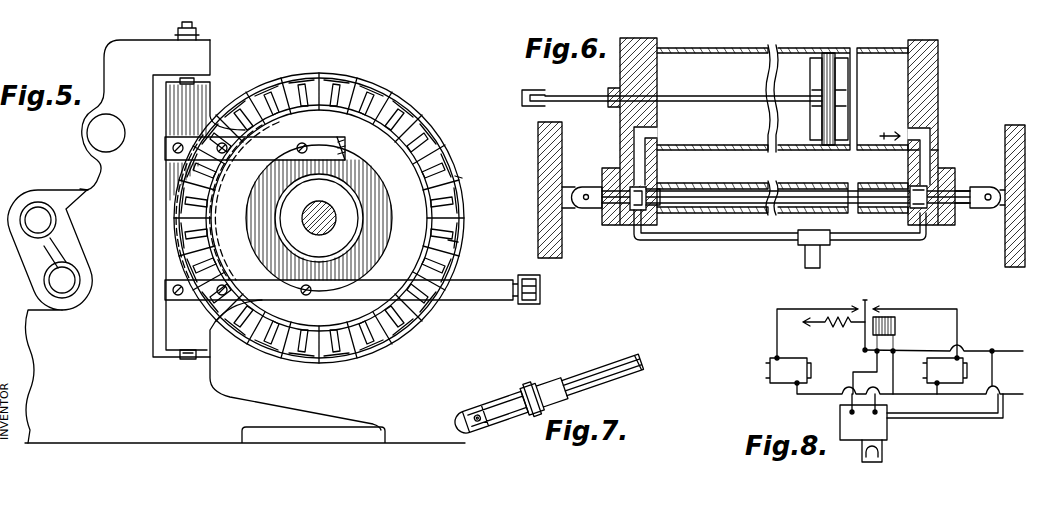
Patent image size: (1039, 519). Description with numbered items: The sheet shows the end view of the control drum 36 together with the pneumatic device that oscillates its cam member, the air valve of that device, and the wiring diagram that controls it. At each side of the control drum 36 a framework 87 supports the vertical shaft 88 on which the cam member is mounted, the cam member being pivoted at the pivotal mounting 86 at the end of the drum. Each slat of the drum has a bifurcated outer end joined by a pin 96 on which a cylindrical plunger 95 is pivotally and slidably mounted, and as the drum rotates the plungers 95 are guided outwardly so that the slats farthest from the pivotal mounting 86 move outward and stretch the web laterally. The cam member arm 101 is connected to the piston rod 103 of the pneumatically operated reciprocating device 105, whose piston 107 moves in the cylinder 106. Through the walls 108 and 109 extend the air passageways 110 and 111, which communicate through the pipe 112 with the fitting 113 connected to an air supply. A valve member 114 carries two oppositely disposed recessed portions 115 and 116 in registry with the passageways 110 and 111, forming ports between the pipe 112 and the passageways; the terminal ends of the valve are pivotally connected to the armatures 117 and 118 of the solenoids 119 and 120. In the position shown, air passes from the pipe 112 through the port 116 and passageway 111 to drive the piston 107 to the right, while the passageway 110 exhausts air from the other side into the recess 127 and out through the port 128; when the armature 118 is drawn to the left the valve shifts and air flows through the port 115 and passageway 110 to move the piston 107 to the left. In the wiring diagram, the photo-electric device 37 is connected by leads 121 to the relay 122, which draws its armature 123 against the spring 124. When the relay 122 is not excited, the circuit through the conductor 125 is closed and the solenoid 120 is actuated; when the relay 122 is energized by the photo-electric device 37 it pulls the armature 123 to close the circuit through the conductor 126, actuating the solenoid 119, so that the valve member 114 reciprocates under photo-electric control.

In FIG. 5, the control drum 36 is at (415, 94).
In FIG. 8, the photo-electric device 37 is at (884, 458).
In FIG. 5, the pivotal mounting 86 is at (197, 33).
In FIG. 5, the framework 87 is at (82, 185).
In FIG. 5, the vertical shaft 88 is at (190, 361).
In FIG. 5, the cylindrical plunger 95 is at (452, 242).
In FIG. 5, the pin 96 is at (455, 178).
In FIG. 5, the cam member arm 101 is at (470, 291).
In FIG. 6, the piston rod 103 is at (576, 88).
In FIG. 6, the pneumatically operated reciprocating device 105 is at (936, 78).
In FIG. 6, the cylinder 106 is at (888, 48).
In FIG. 6, the piston 107 is at (830, 48).
In FIG. 6, the wall 108 is at (930, 118).
In FIG. 6, the wall 109 is at (625, 125).
In FIG. 6, the air passageway 110 is at (910, 134).
In FIG. 6, the air passageway 111 is at (650, 132).
In FIG. 6, the pipe 112 is at (720, 240).
In FIG. 6, the fitting 113 is at (821, 262).
In FIG. 6, the valve member 114 is at (618, 215).
In FIG. 7, the valve member 114 is at (598, 362).
In FIG. 6, the recessed portion 115 is at (945, 226).
In FIG. 6, the recessed portion 116 is at (640, 212).
In FIG. 7, the recessed portion 116 is at (488, 384).
In FIG. 6, the armature 117 is at (1000, 208).
In FIG. 6, the armature 118 is at (576, 212).
In FIG. 6, the solenoid 119 is at (1006, 148).
In FIG. 8, the solenoid 119 is at (935, 370).
In FIG. 6, the solenoid 120 is at (552, 172).
In FIG. 8, the solenoid 120 is at (790, 372).
In FIG. 8, the leads 121 is at (853, 382).
In FIG. 8, the relay 122 is at (896, 325).
In FIG. 8, the armature 123 is at (867, 310).
In FIG. 8, the spring 124 is at (835, 325).
In FIG. 8, the conductor 125 is at (778, 332).
In FIG. 8, the conductor 126 is at (940, 315).
In FIG. 6, the recess 127 is at (912, 190).
In FIG. 7, the recess 127 is at (545, 382).
In FIG. 6, the port 128 is at (695, 180).